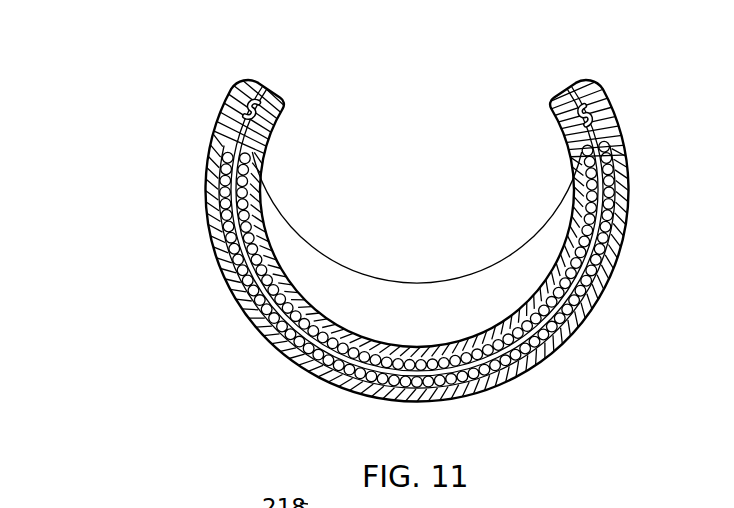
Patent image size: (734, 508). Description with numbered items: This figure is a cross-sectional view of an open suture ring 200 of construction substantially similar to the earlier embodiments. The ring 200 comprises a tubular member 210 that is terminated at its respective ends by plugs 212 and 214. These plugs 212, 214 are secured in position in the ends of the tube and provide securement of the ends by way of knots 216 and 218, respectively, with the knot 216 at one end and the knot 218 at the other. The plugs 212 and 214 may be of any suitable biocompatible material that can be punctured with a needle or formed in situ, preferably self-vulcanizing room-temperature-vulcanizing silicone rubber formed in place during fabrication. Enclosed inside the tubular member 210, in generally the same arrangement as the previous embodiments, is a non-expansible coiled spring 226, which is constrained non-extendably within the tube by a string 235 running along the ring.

The ring 200 is at (205, 148).
The tubular member 210 is at (207, 187).
The plug 212 is at (270, 103).
The plug 214 is at (558, 110).
The knot 216 is at (238, 92).
The knot 218 is at (592, 90).
The coiled spring 226 is at (222, 275).
The string 235 is at (268, 307).